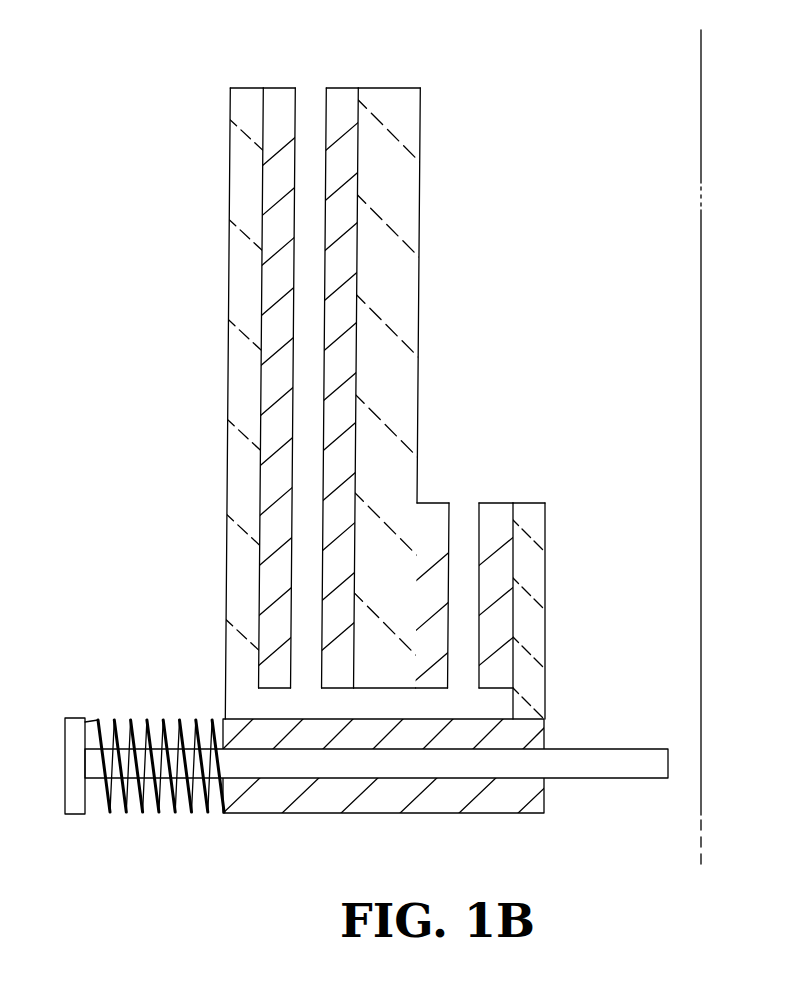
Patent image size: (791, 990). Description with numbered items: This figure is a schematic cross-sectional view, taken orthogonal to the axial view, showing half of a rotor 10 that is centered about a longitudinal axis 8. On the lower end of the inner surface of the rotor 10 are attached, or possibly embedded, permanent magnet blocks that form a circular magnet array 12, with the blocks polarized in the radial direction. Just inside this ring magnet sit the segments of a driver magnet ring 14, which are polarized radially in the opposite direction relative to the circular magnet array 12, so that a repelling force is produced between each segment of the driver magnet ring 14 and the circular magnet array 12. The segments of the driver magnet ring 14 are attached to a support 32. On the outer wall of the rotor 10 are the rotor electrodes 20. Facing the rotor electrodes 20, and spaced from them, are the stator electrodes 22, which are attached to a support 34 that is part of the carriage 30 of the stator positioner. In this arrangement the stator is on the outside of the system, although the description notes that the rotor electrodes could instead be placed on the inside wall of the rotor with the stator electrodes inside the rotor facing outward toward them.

The longitudinal axis 8 is at (672, 450).
The rotor 10 is at (420, 388).
The circular magnet array 12 is at (448, 560).
The driver magnet ring 14 is at (518, 578).
The rotor electrodes 20 is at (353, 365).
The stator electrodes 22 is at (277, 355).
The carriage 30 is at (366, 801).
The support 32 is at (558, 613).
The support 34 is at (235, 376).